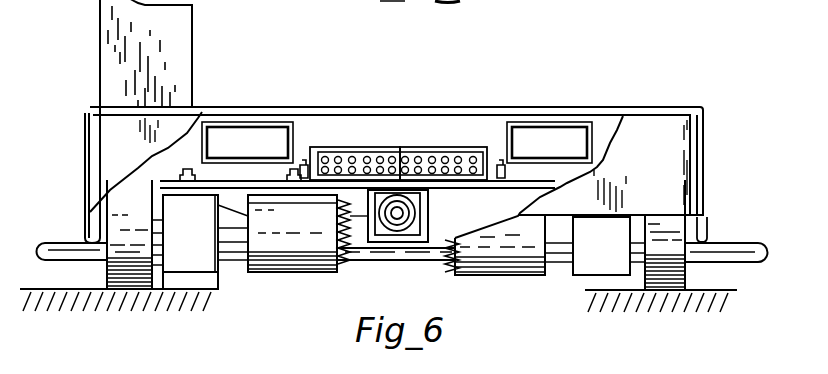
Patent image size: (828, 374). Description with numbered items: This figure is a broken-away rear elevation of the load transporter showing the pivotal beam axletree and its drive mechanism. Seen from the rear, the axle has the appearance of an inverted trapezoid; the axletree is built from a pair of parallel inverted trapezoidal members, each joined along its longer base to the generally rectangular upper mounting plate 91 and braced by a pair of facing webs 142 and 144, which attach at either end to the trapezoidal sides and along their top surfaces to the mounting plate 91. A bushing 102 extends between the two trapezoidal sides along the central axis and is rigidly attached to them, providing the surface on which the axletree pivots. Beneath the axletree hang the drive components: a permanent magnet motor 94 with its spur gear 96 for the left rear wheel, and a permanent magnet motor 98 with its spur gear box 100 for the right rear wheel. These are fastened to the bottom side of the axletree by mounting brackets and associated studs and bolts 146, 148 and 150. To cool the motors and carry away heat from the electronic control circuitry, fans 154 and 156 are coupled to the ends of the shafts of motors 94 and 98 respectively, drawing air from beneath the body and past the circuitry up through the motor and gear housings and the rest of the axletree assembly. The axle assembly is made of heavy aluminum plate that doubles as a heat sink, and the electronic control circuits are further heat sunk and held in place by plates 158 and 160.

The mounting plate 91 is at (212, 182).
The permanent magnet motor 94 is at (274, 258).
The spur gear 96 is at (207, 260).
The permanent magnet motor 98 is at (512, 245).
The spur gear box 100 is at (585, 253).
The bushing 102 is at (397, 232).
The web 142 is at (338, 215).
The web 144 is at (432, 226).
The mounting bracket and associated studs and bolts 146 is at (190, 233).
The mounting bracket and associated studs and bolts 148 is at (303, 158).
The mounting bracket and associated studs and bolts 150 is at (500, 158).
The fan 154 is at (348, 267).
The fan 156 is at (447, 268).
The plate 158 is at (285, 180).
The plate 160 is at (505, 178).